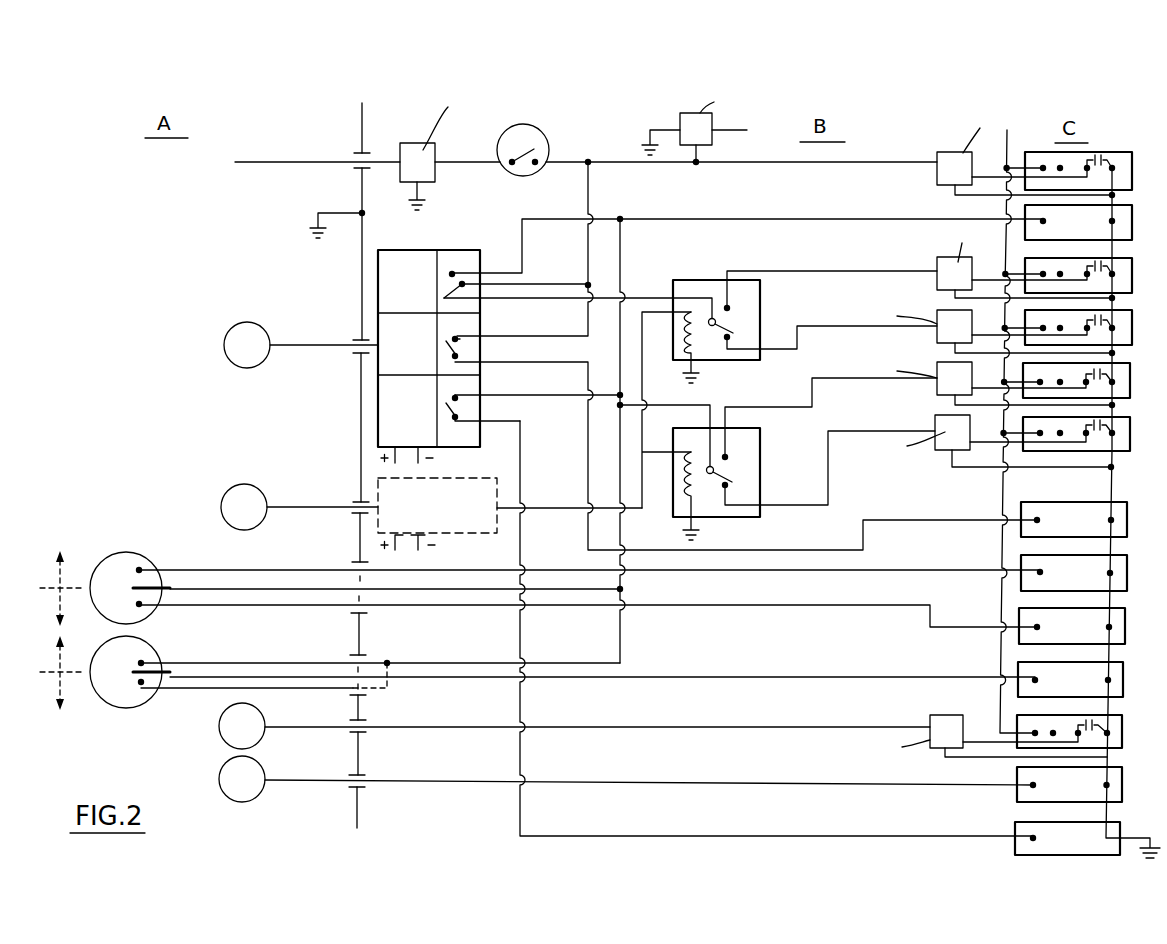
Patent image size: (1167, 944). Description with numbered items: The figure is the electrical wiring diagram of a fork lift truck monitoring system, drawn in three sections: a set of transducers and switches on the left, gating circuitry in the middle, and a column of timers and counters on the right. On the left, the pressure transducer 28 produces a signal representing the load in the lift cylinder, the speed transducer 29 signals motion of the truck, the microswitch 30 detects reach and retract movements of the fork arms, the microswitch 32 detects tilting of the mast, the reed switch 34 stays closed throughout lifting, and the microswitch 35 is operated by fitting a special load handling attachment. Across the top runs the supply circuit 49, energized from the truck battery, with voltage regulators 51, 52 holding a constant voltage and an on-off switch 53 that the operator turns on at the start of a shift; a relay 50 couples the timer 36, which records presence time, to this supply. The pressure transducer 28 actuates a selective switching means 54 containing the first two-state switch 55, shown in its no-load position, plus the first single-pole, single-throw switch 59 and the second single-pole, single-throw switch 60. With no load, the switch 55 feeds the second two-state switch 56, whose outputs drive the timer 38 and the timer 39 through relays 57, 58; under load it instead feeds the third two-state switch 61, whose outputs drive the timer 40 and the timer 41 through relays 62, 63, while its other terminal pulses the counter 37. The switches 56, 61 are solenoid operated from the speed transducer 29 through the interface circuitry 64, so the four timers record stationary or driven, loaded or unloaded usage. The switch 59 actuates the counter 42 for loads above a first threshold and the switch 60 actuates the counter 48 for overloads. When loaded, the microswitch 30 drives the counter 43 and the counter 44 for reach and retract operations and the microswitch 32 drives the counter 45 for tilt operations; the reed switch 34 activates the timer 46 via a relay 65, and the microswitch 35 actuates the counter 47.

The pressure transducer 28 is at (223, 347).
The speed transducer 29 is at (222, 500).
The microswitch 30 is at (112, 555).
The microswitch 32 is at (123, 708).
The reed switch 34 is at (220, 739).
The microswitch 35 is at (222, 772).
The timer 36 is at (1132, 170).
The counter 37 is at (1132, 225).
The timer 38 is at (1132, 278).
The timer 39 is at (1132, 332).
The timer 40 is at (1130, 386).
The timer 41 is at (1130, 440).
The counter 42 is at (1127, 530).
The counter 43 is at (1127, 580).
The counter 44 is at (1125, 636).
The counter 45 is at (1123, 690).
The timer 46 is at (1122, 742).
The counter 47 is at (1122, 795).
The counter 48 is at (1120, 842).
The supply circuit 49 is at (785, 162).
The relay 50 is at (937, 153).
The voltage regulator 51 is at (421, 143).
The voltage regulator 52 is at (680, 121).
The on-off switch 53 is at (505, 133).
The selective switching means 54 is at (424, 250).
The first two-state switch 55 is at (466, 298).
The second two-state switch 56 is at (718, 298).
The relay 57 is at (937, 262).
The relay 58 is at (937, 312).
The first single-pole, single-throw switch 59 is at (462, 343).
The second single-pole, single-throw switch 60 is at (463, 405).
The third two-state switch 61 is at (758, 475).
The relay 62 is at (937, 363).
The relay 63 is at (935, 416).
The interface circuitry 64 is at (440, 520).
The relay 65 is at (930, 718).